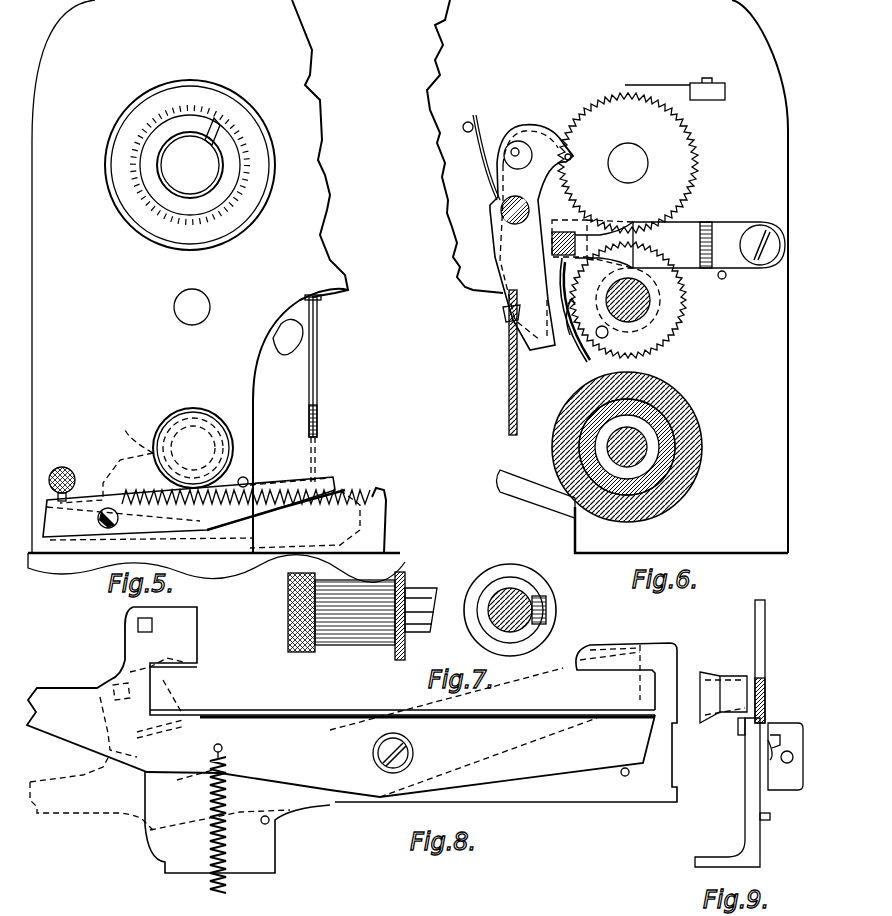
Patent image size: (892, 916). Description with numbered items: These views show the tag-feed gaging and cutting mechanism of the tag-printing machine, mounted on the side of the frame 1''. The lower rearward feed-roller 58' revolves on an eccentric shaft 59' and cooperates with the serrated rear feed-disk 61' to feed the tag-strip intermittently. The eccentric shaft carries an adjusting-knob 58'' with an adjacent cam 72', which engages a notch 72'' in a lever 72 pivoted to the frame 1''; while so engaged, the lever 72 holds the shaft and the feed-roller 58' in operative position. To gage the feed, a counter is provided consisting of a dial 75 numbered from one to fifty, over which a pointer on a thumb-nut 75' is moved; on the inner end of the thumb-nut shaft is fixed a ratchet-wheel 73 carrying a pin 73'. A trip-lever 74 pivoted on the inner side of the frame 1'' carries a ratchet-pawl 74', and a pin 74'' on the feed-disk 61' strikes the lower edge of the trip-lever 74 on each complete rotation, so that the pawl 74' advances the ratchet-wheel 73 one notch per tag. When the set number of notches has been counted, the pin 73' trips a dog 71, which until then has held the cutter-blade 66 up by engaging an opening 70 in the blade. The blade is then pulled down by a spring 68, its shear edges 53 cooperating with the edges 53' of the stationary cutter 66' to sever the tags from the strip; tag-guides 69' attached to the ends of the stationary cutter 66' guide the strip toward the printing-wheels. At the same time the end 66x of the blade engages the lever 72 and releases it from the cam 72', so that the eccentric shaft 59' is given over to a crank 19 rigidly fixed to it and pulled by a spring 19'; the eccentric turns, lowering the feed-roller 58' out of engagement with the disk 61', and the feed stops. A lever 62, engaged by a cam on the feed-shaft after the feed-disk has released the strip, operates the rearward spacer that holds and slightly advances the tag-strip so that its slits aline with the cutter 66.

In FIG. 5, the frame 1'' is at (120, 279).
In FIG. 6, the frame 1'' is at (722, 352).
In FIG. 5, the crank 19 is at (106, 457).
In FIG. 5, the spring 19' is at (318, 503).
In FIG. 8, the shear edges 53 is at (351, 679).
In FIG. 8, the shear edges 53' is at (388, 691).
In FIG. 6, the lower rearward feed-roller 58' is at (634, 447).
In FIG. 5, the adjusting-knob 58'' is at (188, 430).
In FIG. 7, the adjusting-knob 58'' is at (422, 610).
In FIG. 5, the eccentric shaft 59' is at (197, 424).
In FIG. 6, the eccentric shaft 59' is at (675, 447).
In FIG. 7, the eccentric shaft 59' is at (471, 598).
In FIG. 6, the rear feed-disk 61' is at (649, 300).
In FIG. 6, the lever 62 is at (567, 360).
In FIG. 5, the cutter-blade 66 is at (330, 388).
In FIG. 6, the cutter-blade 66 is at (495, 362).
In FIG. 8, the cutter-blade 66 is at (352, 704).
In FIG. 9, the cutter-blade 66 is at (766, 667).
In FIG. 8, the stationary cutter 66' is at (313, 770).
In FIG. 9, the stationary cutter 66' is at (732, 792).
In FIG. 5, the end of cutter-blade 66x is at (320, 415).
In FIG. 8, the end of cutter-blade 66x is at (77, 722).
In FIG. 8, the spring 68 is at (227, 840).
In FIG. 8, the tag-guides 69' is at (388, 859).
In FIG. 9, the tag-guides 69' is at (723, 681).
In FIG. 6, the opening 70 is at (503, 322).
In FIG. 8, the opening 70 is at (138, 624).
In FIG. 9, the opening 70 is at (785, 756).
In FIG. 5, the dog 71 is at (290, 352).
In FIG. 6, the dog 71 is at (518, 232).
In FIG. 5, the lever 72 is at (198, 484).
In FIG. 6, the lever 72 is at (536, 502).
In FIG. 5, the cam 72' is at (193, 458).
In FIG. 7, the cam 72' is at (404, 633).
In FIG. 5, the notch 72'' is at (246, 509).
In FIG. 6, the ratchet-wheel 73 is at (643, 155).
In FIG. 6, the pin 73' is at (580, 168).
In FIG. 6, the trip-lever 74 is at (709, 231).
In FIG. 6, the ratchet-pawl 74' is at (595, 232).
In FIG. 6, the pin 74'' is at (626, 342).
In FIG. 5, the dial 75 is at (166, 165).
In FIG. 5, the thumb-nut 75' is at (190, 158).